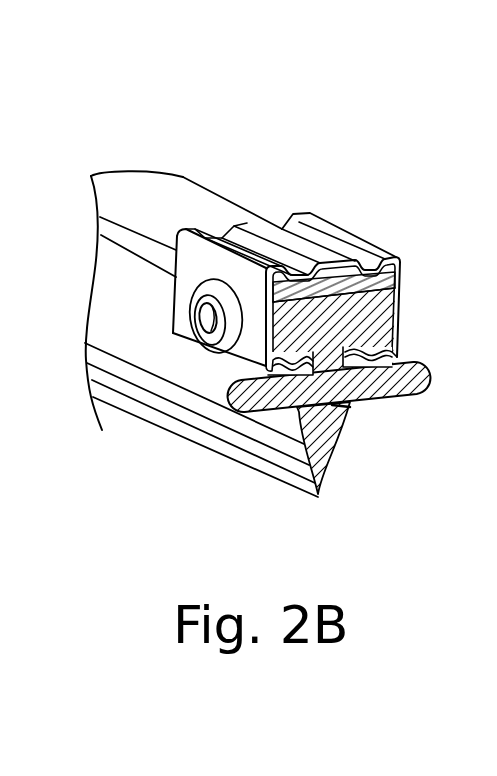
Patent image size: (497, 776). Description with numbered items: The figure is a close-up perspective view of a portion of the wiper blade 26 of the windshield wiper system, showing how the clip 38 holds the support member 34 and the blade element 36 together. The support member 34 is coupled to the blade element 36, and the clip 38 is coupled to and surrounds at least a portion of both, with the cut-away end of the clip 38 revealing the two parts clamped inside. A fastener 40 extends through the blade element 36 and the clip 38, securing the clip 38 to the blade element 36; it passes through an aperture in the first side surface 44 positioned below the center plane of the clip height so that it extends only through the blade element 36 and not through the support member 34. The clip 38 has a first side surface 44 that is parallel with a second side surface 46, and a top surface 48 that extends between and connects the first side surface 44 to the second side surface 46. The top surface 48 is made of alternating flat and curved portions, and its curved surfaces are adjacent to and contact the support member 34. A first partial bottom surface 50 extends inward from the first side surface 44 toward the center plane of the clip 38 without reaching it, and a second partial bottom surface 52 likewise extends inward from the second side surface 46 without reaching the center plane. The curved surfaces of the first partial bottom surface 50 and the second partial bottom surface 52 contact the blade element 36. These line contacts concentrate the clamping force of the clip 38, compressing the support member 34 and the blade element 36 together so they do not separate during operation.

The wiper blade 26 is at (124, 117).
The support member 34 is at (155, 188).
The blade element 36 is at (364, 428).
The clip 38 is at (301, 205).
The fastener 40 is at (212, 340).
The first side surface 44 is at (182, 276).
The second side surface 46 is at (408, 298).
The top surface 48 is at (251, 213).
The first partial bottom surface 50 is at (279, 378).
The second partial bottom surface 52 is at (388, 364).